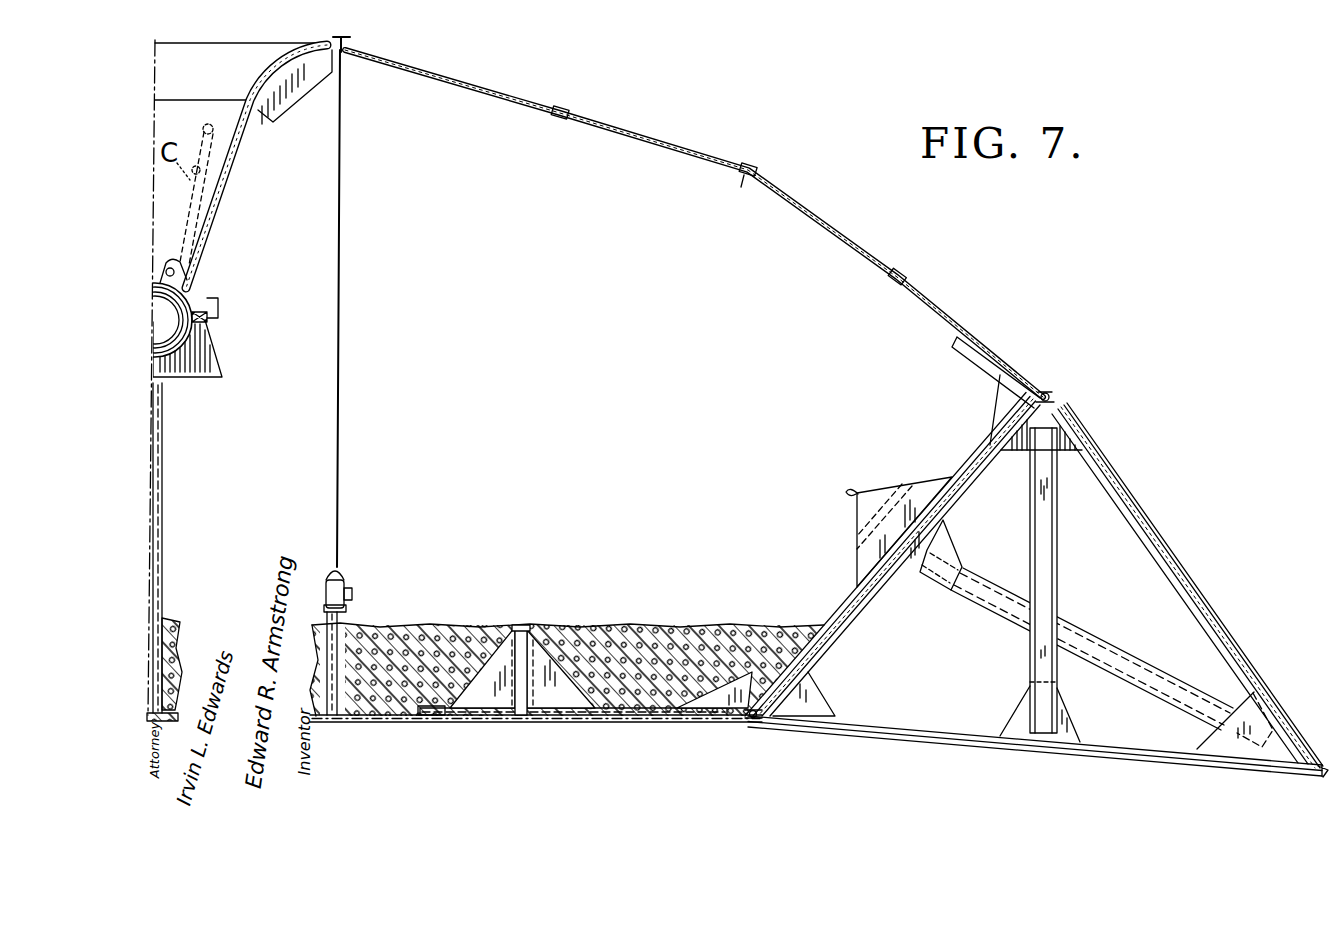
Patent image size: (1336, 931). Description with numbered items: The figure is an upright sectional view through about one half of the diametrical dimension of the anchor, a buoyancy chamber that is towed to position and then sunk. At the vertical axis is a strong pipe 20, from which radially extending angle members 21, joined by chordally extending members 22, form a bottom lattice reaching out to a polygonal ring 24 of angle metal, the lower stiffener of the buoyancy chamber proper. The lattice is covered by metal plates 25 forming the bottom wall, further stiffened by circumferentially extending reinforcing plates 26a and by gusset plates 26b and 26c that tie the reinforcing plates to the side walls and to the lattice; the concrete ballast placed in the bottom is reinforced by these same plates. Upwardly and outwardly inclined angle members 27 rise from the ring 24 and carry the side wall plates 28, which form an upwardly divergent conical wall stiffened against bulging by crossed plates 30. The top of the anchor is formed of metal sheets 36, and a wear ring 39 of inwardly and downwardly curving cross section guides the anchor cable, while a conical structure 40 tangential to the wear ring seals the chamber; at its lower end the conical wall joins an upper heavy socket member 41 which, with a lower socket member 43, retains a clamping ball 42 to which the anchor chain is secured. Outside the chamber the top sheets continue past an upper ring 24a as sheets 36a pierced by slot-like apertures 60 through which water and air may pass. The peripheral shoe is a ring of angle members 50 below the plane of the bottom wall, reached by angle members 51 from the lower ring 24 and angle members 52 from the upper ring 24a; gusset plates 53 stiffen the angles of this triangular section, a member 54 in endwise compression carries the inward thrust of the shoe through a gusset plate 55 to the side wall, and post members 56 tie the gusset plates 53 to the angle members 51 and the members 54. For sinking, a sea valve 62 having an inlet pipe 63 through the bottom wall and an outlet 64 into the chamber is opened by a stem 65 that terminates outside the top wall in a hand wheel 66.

The pipe 20 is at (163, 394).
The angle members 21 is at (632, 720).
The chordally extending members 22 is at (421, 718).
The ring 24 is at (745, 724).
The upper ring 24a is at (1055, 401).
The metal plates 25 is at (580, 724).
The circumferentially extending reinforcing plates 26a is at (520, 627).
The gusset plates 26b is at (548, 690).
The gusset plates 26c is at (753, 670).
The inclined angle members 27 is at (838, 604).
The side wall plates 28 is at (836, 646).
The crossed plates 30 is at (858, 492).
The top wall sheets 36 is at (550, 110).
The sheets 36a is at (1102, 456).
The wear ring 39 is at (266, 74).
The conical structure 40 is at (216, 210).
The upper socket member 41 is at (218, 298).
The clamping ball 42 is at (182, 312).
The lower socket member 43 is at (195, 333).
The shoe 50 is at (1313, 776).
The angle members 51 is at (932, 742).
The angle members 52 is at (1208, 635).
The gusset plates 53 is at (1214, 758).
The compression member 54 is at (1087, 640).
The gusset plate 55 is at (938, 546).
The post members 56 is at (1040, 658).
The apertures 60 is at (1190, 579).
The sea valve 62 is at (338, 584).
The inlet pipe 63 is at (333, 723).
The outlet 64 is at (352, 597).
The stem 65 is at (340, 448).
The hand wheel 66 is at (352, 38).